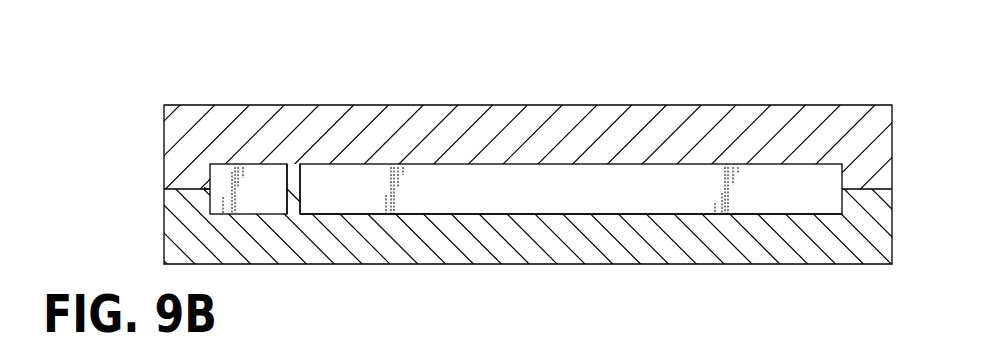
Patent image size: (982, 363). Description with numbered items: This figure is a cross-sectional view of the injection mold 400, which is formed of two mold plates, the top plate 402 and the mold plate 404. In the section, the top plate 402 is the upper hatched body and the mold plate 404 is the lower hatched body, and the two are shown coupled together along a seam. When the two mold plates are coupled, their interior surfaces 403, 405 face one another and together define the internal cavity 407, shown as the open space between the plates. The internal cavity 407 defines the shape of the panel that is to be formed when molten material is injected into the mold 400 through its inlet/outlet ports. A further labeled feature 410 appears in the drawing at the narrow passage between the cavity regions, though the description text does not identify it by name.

The injection mold 400 is at (149, 72).
The top plate 402 is at (617, 105).
The interior surface 403 is at (648, 164).
The mold plate 404 is at (633, 265).
The interior surface 405 is at (493, 214).
The internal cavity 407 is at (583, 204).
The channel 410 is at (300, 196).